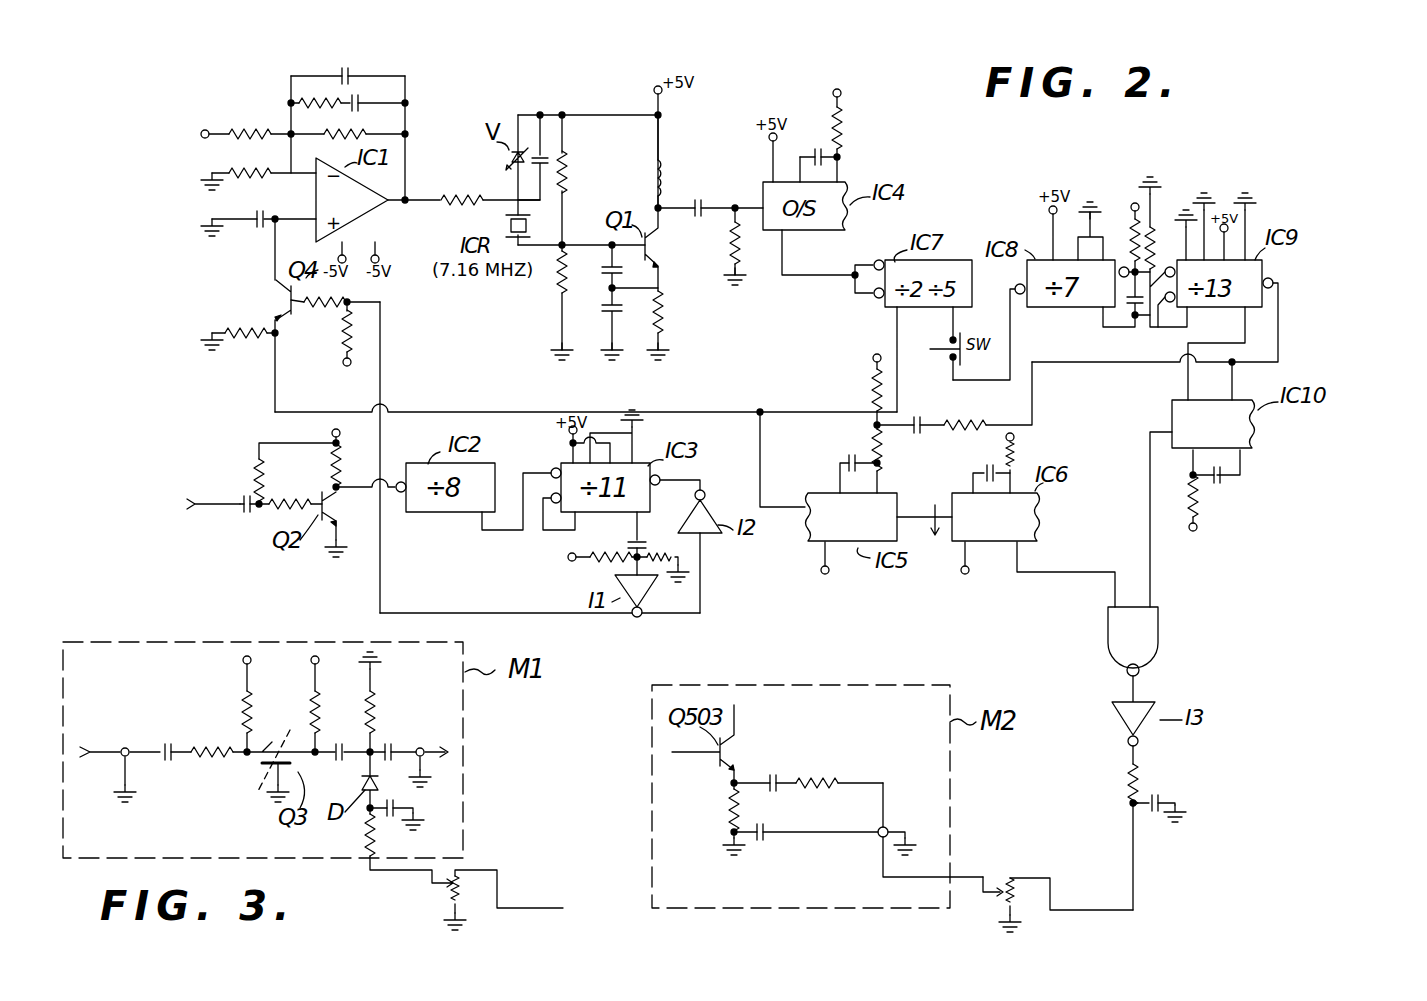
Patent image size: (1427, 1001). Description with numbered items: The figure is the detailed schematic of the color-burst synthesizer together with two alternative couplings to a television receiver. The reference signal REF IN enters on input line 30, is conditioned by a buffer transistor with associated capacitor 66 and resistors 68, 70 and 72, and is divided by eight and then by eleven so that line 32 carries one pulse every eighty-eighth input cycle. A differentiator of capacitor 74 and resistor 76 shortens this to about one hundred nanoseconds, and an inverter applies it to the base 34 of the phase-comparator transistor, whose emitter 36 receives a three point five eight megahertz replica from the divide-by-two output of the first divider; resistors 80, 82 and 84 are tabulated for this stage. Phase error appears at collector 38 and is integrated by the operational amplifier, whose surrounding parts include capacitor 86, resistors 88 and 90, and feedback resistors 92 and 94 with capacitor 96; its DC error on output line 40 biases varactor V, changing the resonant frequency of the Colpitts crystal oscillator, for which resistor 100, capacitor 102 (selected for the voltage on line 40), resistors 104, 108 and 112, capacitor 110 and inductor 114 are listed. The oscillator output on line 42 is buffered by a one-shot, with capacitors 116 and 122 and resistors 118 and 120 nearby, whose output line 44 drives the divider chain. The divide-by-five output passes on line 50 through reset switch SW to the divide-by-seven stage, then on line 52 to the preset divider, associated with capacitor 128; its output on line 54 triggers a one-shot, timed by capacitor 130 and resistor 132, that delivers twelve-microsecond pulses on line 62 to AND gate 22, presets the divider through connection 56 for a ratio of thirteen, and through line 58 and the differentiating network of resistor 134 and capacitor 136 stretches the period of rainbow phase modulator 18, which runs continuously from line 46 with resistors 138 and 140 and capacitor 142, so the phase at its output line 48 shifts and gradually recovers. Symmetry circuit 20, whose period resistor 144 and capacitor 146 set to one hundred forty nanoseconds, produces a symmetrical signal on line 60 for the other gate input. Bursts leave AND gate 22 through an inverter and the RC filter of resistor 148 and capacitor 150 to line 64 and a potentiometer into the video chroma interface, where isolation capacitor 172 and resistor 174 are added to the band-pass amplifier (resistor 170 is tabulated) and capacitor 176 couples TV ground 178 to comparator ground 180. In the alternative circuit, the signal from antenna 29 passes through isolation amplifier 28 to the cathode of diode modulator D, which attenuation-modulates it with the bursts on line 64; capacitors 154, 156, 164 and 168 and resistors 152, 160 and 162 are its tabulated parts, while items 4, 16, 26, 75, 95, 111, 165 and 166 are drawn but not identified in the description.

In FIG. 3, the antenna module M1 4 is at (263, 747).
In FIG. 2, the one-shot IC10 16 is at (1277, 458).
In FIG. 2, the rainbow phase modulator 18 is at (795, 582).
In FIG. 2, the symmetry circuit 20 is at (995, 602).
In FIG. 2, the AND gate 22 is at (1162, 630).
In FIG. 2, the resistor 26 is at (1153, 215).
In FIG. 3, the isolation amplifier 28 is at (407, 715).
In FIG. 3, the antenna 29 is at (112, 748).
In FIG. 2, the input line 30 is at (210, 508).
In FIG. 2, the line 32 is at (635, 530).
In FIG. 2, the base 34 is at (387, 587).
In FIG. 2, the emitter 36 is at (513, 410).
In FIG. 2, the collector 38 is at (295, 217).
In FIG. 2, the output line 40 is at (432, 213).
In FIG. 2, the line 42 is at (748, 205).
In FIG. 2, the line 44 is at (822, 276).
In FIG. 2, the line 46 is at (762, 462).
In FIG. 2, the output line 48 is at (918, 512).
In FIG. 2, the line 50 is at (1010, 335).
In FIG. 2, the line 52 is at (1148, 322).
In FIG. 2, the line 54 is at (1235, 350).
In FIG. 2, the connection 56 is at (1283, 343).
In FIG. 2, the line 58 is at (1108, 365).
In FIG. 2, the line 60 is at (1070, 585).
In FIG. 2, the line 62 is at (1155, 573).
In FIG. 2, the line 64 is at (1137, 900).
In FIG. 3, the line 64 is at (500, 887).
In FIG. 2, the capacitor 66 is at (240, 514).
In FIG. 2, the resistor 68 is at (254, 472).
In FIG. 2, the resistor 70 is at (306, 485).
In FIG. 2, the resistor 72 is at (342, 471).
In FIG. 2, the capacitor 74 is at (646, 543).
In FIG. 2, the resistor 75 is at (600, 564).
In FIG. 2, the resistor 76 is at (668, 554).
In FIG. 2, the resistor 80 is at (342, 348).
In FIG. 2, the resistor 82 is at (332, 311).
In FIG. 2, the resistor 84 is at (252, 326).
In FIG. 2, the capacitor 86 is at (256, 231).
In FIG. 2, the resistor 88 is at (269, 122).
In FIG. 2, the resistor 90 is at (275, 160).
In FIG. 2, the resistor 92 is at (364, 131).
In FIG. 2, the resistor 94 is at (328, 100).
In FIG. 2, the capacitor 95 is at (360, 101).
In FIG. 2, the capacitor 96 is at (353, 72).
In FIG. 2, the resistor 100 is at (478, 196).
In FIG. 2, the capacitor 102 is at (546, 148).
In FIG. 2, the resistor 104 is at (568, 172).
In FIG. 2, the resistor 108 is at (557, 283).
In FIG. 2, the capacitor 110 is at (606, 310).
In FIG. 2, the capacitor 111 is at (606, 273).
In FIG. 2, the resistor 112 is at (663, 300).
In FIG. 2, the inductor 114 is at (664, 190).
In FIG. 2, the capacitor 116 is at (702, 218).
In FIG. 2, the resistor 118 is at (740, 243).
In FIG. 2, the resistor 120 is at (845, 138).
In FIG. 2, the capacitor 122 is at (818, 150).
In FIG. 2, the capacitor 128 is at (1128, 318).
In FIG. 2, the capacitor 130 is at (1223, 487).
In FIG. 2, the resistor 132 is at (1205, 505).
In FIG. 2, the resistor 134 is at (960, 418).
In FIG. 2, the capacitor 136 is at (940, 402).
In FIG. 2, the resistor 138 is at (870, 390).
In FIG. 2, the resistor 140 is at (872, 448).
In FIG. 2, the capacitor 142 is at (849, 460).
In FIG. 2, the resistor 144 is at (1005, 452).
In FIG. 2, the capacitor 146 is at (982, 470).
In FIG. 2, the resistor 148 is at (1148, 782).
In FIG. 2, the capacitor 150 is at (1165, 812).
In FIG. 3, the resistor 152 is at (365, 840).
In FIG. 3, the capacitor 154 is at (415, 803).
In FIG. 3, the capacitor 156 is at (165, 765).
In FIG. 3, the resistor 160 is at (252, 712).
In FIG. 3, the resistor 162 is at (320, 712).
In FIG. 3, the capacitor 164 is at (338, 762).
In FIG. 3, the capacitor 165 is at (410, 762).
In FIG. 3, the resistor 166 is at (380, 727).
In FIG. 3, the capacitor 168 is at (222, 745).
In FIG. 2, the resistor 170 is at (728, 808).
In FIG. 2, the capacitor 172 is at (790, 760).
In FIG. 2, the resistor 174 is at (1130, 245).
In FIG. 2, the capacitor 176 is at (765, 842).
In FIG. 2, the ground wire 178 is at (728, 840).
In FIG. 2, the ground line 180 is at (908, 838).